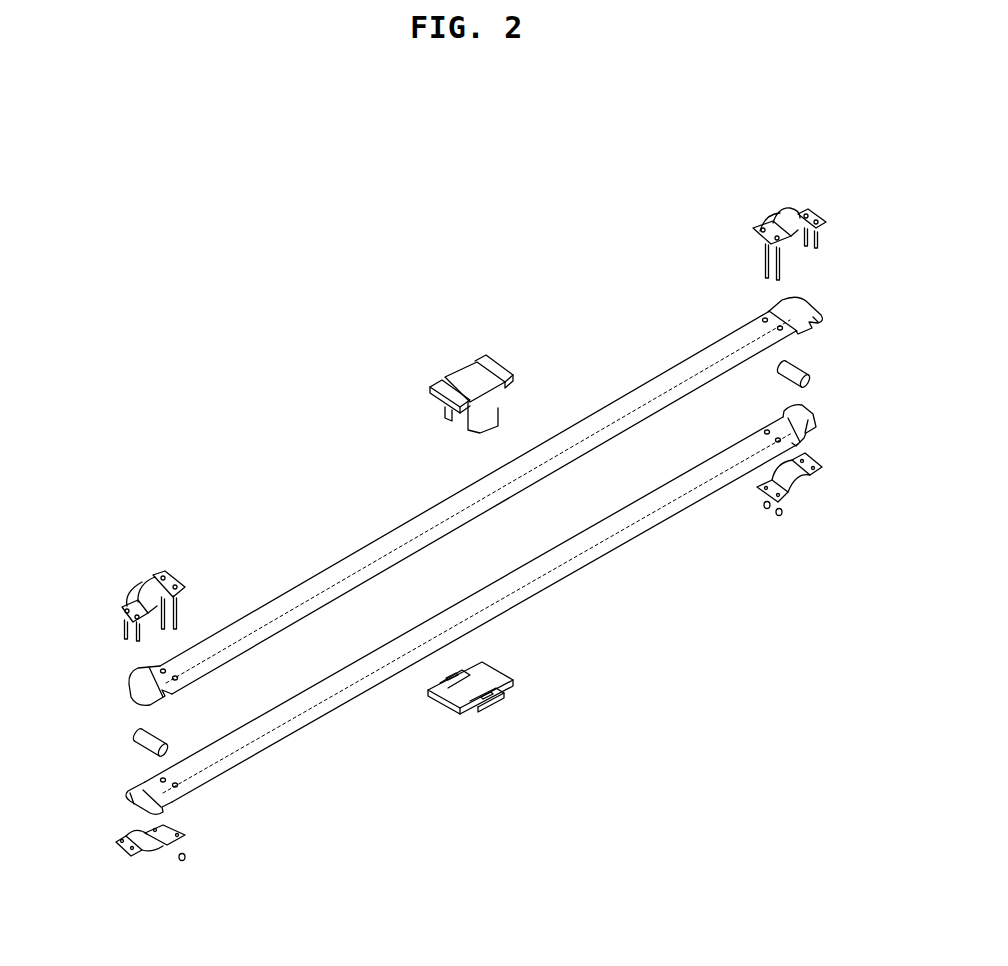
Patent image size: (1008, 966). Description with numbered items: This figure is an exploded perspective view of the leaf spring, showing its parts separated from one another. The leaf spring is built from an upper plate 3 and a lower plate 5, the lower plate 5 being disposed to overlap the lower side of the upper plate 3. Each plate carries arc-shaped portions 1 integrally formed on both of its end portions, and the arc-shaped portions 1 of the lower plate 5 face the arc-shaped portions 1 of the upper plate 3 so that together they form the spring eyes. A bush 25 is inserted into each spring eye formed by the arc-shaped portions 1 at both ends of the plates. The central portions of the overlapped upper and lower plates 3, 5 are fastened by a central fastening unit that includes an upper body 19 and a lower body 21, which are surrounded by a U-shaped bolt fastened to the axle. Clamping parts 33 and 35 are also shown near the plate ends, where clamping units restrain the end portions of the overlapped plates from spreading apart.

The arc-shaped portion 1 is at (798, 316).
The upper plate 3 is at (350, 562).
The lower plate 5 is at (310, 708).
The upper body 19 is at (456, 373).
The lower body 21 is at (492, 708).
The bush 25 is at (808, 365).
The clamp 33 is at (773, 216).
The clamp bracket 35 is at (800, 497).